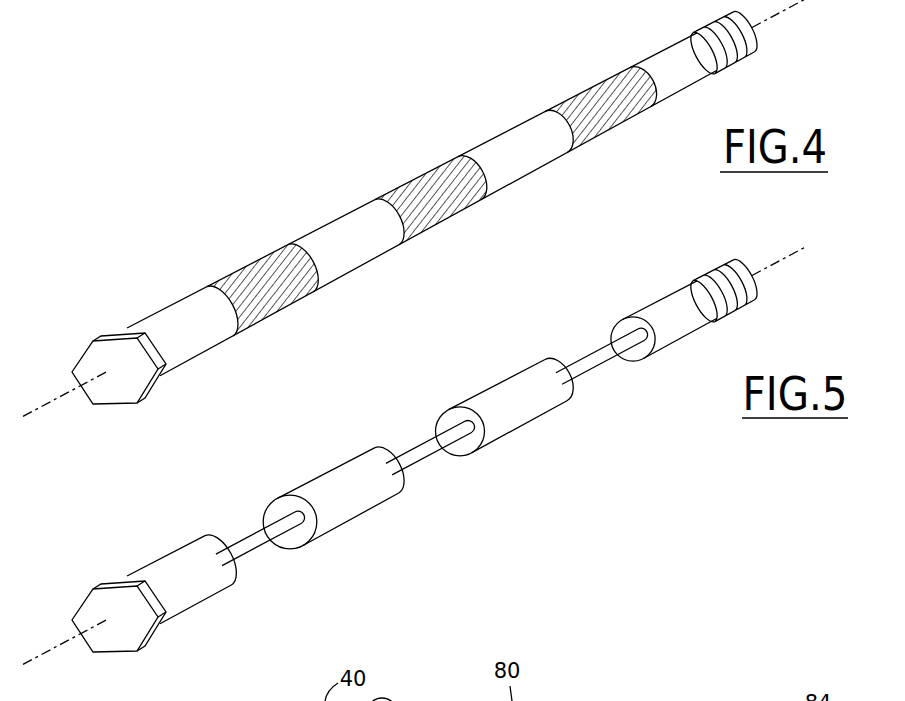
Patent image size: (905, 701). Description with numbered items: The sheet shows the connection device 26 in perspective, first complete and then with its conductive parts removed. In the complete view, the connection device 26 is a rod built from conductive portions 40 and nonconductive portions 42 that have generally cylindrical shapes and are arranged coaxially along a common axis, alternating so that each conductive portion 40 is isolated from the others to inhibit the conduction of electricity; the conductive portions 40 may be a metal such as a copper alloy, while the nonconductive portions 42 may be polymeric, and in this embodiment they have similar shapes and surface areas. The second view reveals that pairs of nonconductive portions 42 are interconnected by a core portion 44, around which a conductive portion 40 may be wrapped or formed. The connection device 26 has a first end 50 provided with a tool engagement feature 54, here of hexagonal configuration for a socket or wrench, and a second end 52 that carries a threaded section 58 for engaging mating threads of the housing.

In FIG. 4, the connection device 26 is at (313, 126).
In FIG. 4, the conductive portion 40 is at (612, 129).
In FIG. 4, the nonconductive portion 42 is at (430, 196).
In FIG. 5, the nonconductive portion 42 is at (422, 452).
In FIG. 5, the core portion 44 is at (600, 374).
In FIG. 4, the first end 50 is at (93, 366).
In FIG. 5, the first end 50 is at (93, 614).
In FIG. 4, the second end 52 is at (752, 15).
In FIG. 5, the second end 52 is at (755, 263).
In FIG. 4, the tool engagement feature 54 is at (115, 405).
In FIG. 5, the tool engagement feature 54 is at (115, 653).
In FIG. 4, the threaded section 58 is at (731, 64).
In FIG. 5, the threaded section 58 is at (732, 312).